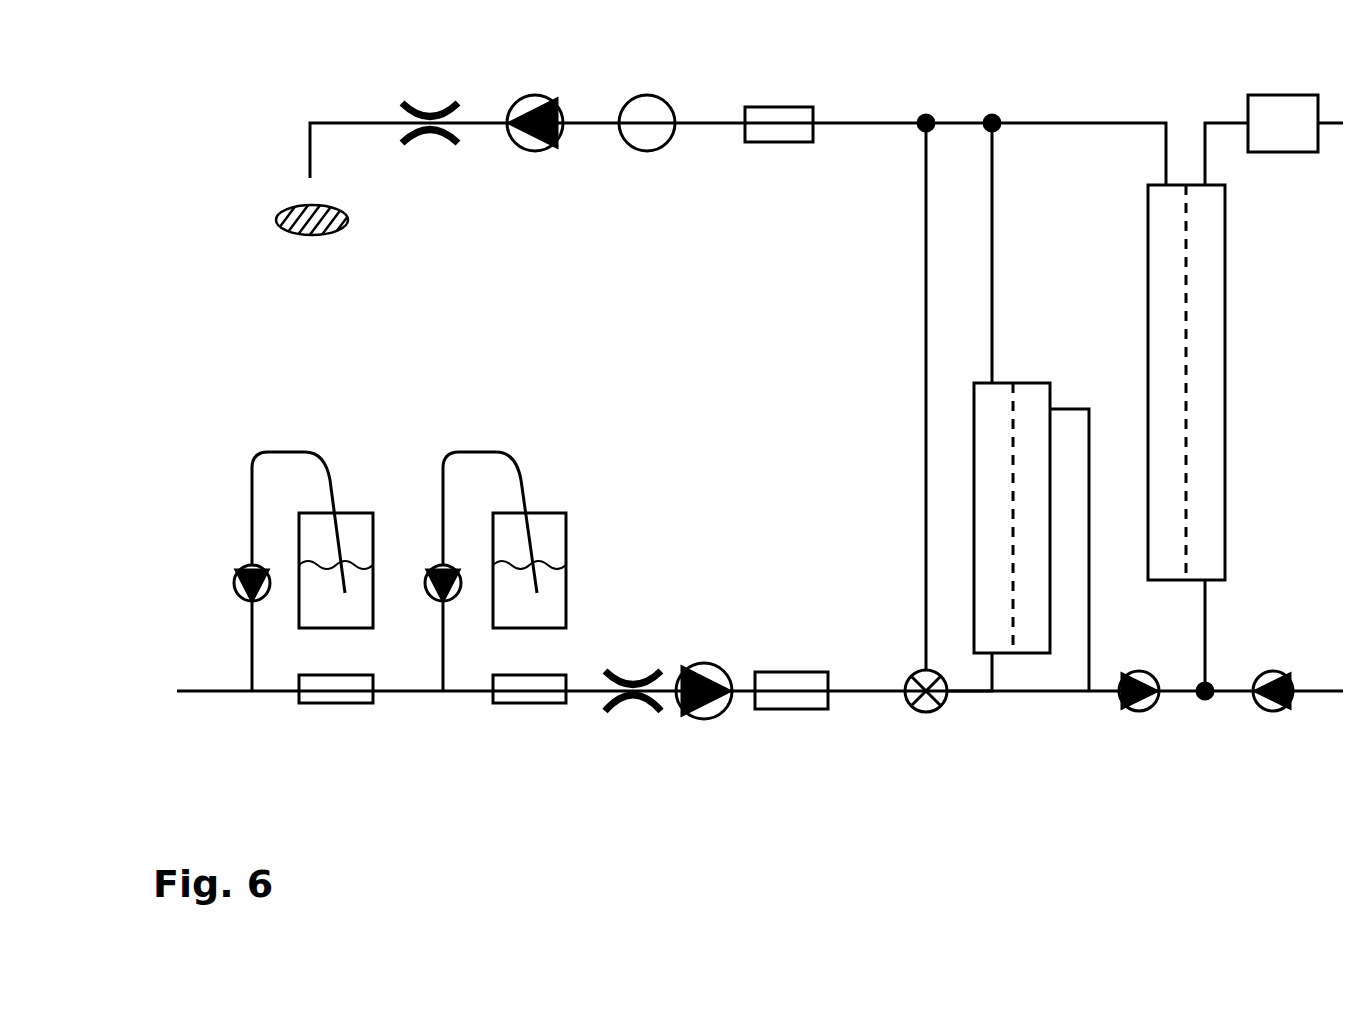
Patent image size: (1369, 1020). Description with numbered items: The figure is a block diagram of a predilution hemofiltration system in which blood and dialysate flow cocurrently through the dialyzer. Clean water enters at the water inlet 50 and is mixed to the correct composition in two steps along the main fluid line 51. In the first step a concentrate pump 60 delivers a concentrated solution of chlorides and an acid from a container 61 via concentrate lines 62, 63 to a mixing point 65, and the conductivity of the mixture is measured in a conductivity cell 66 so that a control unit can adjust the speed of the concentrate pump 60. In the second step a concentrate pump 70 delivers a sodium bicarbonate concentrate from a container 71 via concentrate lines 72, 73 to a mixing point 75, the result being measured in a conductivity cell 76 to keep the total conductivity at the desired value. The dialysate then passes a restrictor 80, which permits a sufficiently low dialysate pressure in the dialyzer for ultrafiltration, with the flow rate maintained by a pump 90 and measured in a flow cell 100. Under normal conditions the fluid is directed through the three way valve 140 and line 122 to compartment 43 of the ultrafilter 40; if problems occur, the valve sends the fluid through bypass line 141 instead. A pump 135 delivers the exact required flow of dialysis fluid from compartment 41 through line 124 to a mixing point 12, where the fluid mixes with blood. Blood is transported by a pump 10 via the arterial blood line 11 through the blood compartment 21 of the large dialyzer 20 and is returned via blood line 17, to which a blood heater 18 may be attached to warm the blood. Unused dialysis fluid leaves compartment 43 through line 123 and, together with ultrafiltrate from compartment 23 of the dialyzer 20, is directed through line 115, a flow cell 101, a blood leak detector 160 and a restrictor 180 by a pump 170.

The pump 10 is at (1273, 712).
The arterial blood line 11 is at (1228, 692).
The mixing point 12 is at (1208, 689).
The blood line 17 is at (1218, 122).
The blood heater 18 is at (1292, 95).
The dialyzer 20 is at (1227, 242).
The blood compartment 21 is at (1210, 382).
The compartment 23 is at (1167, 253).
The ultrafilter 40 is at (1022, 383).
The compartment 41 is at (1030, 655).
The compartment 43 is at (990, 490).
The water inlet 50 is at (205, 692).
The main fluid line 51 is at (275, 692).
The concentrate pump 60 is at (237, 572).
The container 61 is at (350, 513).
The concentrate line 62 is at (291, 450).
The concentrate line 63 is at (254, 647).
The mixing point 65 is at (250, 688).
The conductivity cell 66 is at (340, 705).
The concentrate pump 70 is at (428, 572).
The container 71 is at (545, 513).
The concentrate line 72 is at (484, 450).
The concentrate line 73 is at (445, 647).
The mixing point 75 is at (443, 705).
The conductivity cell 76 is at (532, 705).
The restrictor 80 is at (633, 713).
The pump 90 is at (704, 720).
The flow cell 100 is at (790, 710).
The flow cell 101 is at (778, 143).
The line 115 is at (865, 123).
The line 122 is at (970, 693).
The line 123 is at (992, 194).
The line 124 is at (1089, 610).
The pump 135 is at (1139, 712).
The three way valve 140 is at (926, 714).
The line 141 is at (926, 328).
The blood leak detector 160 is at (647, 152).
The pump 170 is at (535, 152).
The restrictor 180 is at (430, 140).